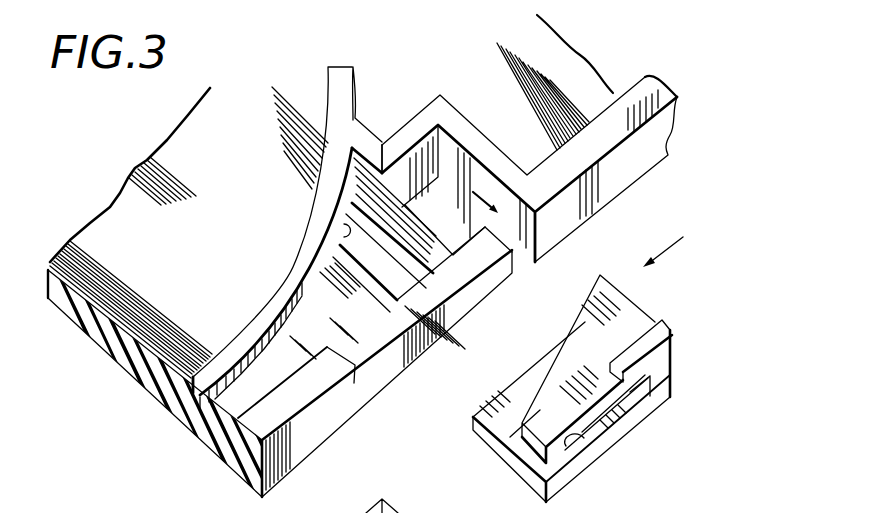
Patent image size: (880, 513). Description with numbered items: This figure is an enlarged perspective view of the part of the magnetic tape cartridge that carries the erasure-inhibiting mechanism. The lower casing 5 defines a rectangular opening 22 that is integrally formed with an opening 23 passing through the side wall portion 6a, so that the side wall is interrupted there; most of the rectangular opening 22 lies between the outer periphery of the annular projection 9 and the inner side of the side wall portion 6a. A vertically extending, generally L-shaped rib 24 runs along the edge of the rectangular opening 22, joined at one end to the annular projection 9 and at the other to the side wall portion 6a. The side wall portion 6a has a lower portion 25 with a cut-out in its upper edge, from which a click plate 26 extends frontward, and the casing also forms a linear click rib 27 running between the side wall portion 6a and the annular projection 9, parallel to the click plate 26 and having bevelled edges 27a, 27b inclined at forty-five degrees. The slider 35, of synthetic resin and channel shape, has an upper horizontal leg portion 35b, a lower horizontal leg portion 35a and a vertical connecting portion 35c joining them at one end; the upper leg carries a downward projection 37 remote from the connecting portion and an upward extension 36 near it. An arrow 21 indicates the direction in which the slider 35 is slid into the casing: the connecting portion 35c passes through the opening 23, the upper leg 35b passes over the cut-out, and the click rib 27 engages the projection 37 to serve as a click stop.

The lower casing 5 is at (668, 139).
The side wall portion 6a is at (582, 157).
The annular projection 9 is at (296, 268).
The insertion direction 21 is at (677, 238).
The rectangular opening 22 is at (466, 185).
The opening 23 is at (525, 250).
The rib 24 is at (455, 118).
The lower portion 25 is at (358, 370).
The click plate 26 is at (360, 187).
The click rib 27 is at (343, 240).
The bevelled edge 27a is at (350, 215).
The bevelled edge 27b is at (355, 250).
The slider 35 is at (674, 353).
The lower horizontal leg portion 35a is at (513, 433).
The upper horizontal leg portion 35b is at (550, 397).
The vertical connecting portion 35c is at (649, 379).
The extension 36 is at (640, 346).
The projection 37 is at (586, 438).